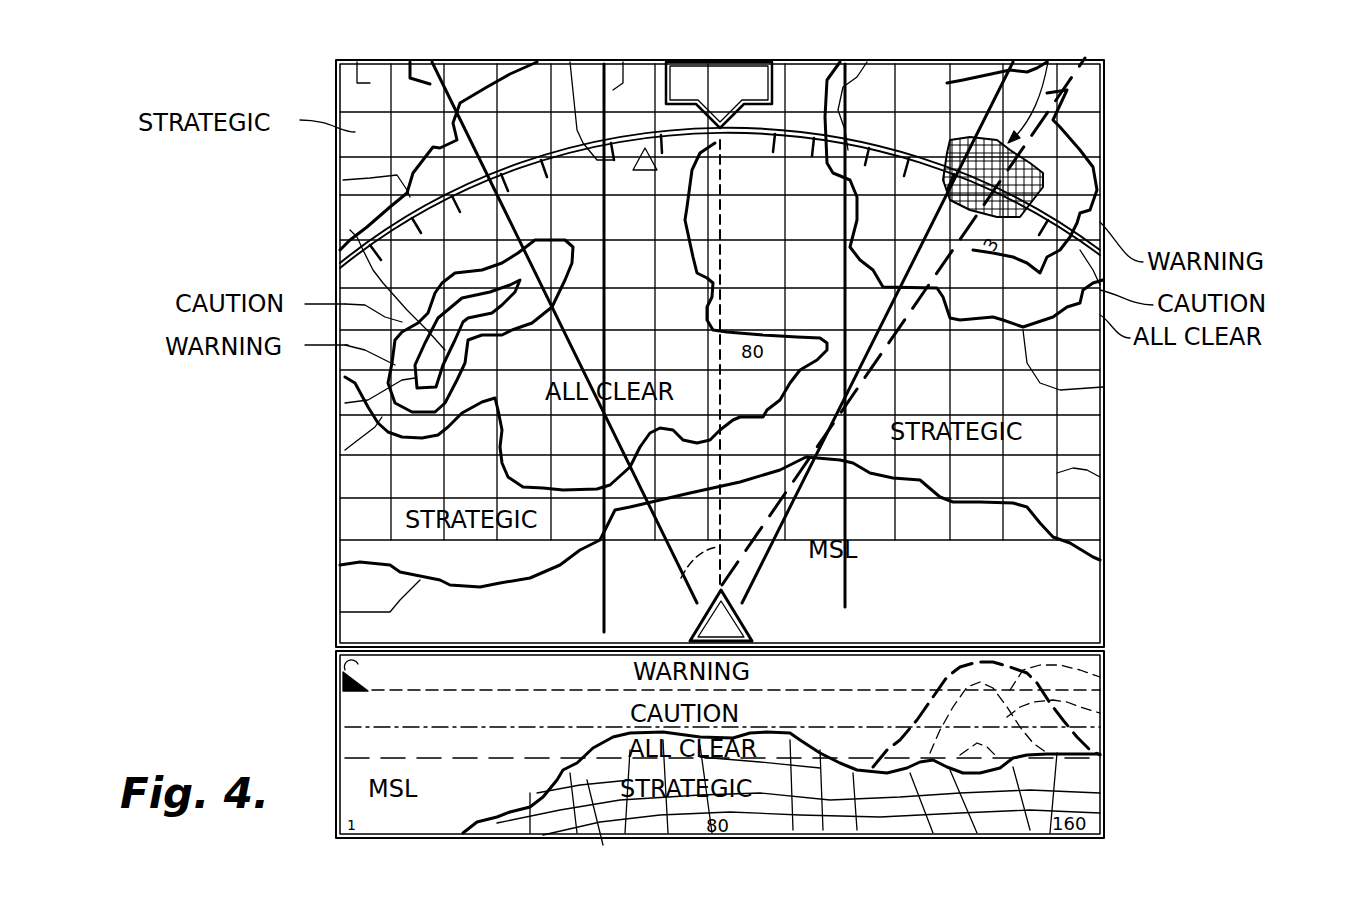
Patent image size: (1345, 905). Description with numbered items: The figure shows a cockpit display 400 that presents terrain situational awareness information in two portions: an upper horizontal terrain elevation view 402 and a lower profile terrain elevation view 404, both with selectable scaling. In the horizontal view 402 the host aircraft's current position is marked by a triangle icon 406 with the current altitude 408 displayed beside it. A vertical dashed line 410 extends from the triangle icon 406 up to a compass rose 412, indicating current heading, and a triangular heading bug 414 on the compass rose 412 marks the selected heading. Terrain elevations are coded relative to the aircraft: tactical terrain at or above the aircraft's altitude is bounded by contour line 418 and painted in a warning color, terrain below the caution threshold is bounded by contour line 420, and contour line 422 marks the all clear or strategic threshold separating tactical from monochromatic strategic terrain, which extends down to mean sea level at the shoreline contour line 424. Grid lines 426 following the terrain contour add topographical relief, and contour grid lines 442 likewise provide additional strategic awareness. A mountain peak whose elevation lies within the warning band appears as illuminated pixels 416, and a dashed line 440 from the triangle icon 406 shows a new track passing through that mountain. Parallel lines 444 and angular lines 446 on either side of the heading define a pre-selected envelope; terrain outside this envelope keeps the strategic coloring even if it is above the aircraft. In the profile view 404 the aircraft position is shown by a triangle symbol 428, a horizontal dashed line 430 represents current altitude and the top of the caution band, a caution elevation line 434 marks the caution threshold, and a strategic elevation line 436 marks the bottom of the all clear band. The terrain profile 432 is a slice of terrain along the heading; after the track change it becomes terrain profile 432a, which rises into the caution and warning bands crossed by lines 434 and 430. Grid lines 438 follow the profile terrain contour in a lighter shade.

The cockpit display 400 is at (1160, 61).
The horizontal terrain elevation view 402 is at (1265, 62).
The profile terrain elevation view 404 is at (1200, 657).
The triangle icon 406 is at (700, 620).
The current altitude 408 is at (793, 620).
The vertical dashed line 410 is at (680, 578).
The compass rose 412 is at (576, 62).
The triangular heading bug 414 is at (678, 62).
The region of illuminated pixels 416 is at (1048, 122).
The contour line 418 is at (352, 404).
The contour line 420 is at (360, 228).
The contour line 422 is at (345, 180).
The contour line 424 is at (392, 604).
The grid lines 426 is at (1100, 478).
The triangle symbol 428 is at (340, 668).
The horizontal dashed line 430 is at (432, 690).
The terrain profile 432 is at (545, 790).
The terrain profile 432a is at (1100, 672).
The caution elevation line 434 is at (440, 727).
The strategic elevation line 436 is at (450, 758).
The grid lines 438 is at (578, 840).
The dashed line 440 is at (786, 490).
The contour grid lines 442 is at (1100, 712).
The parallel lines 444 is at (623, 60).
The angular lines 446 is at (410, 60).